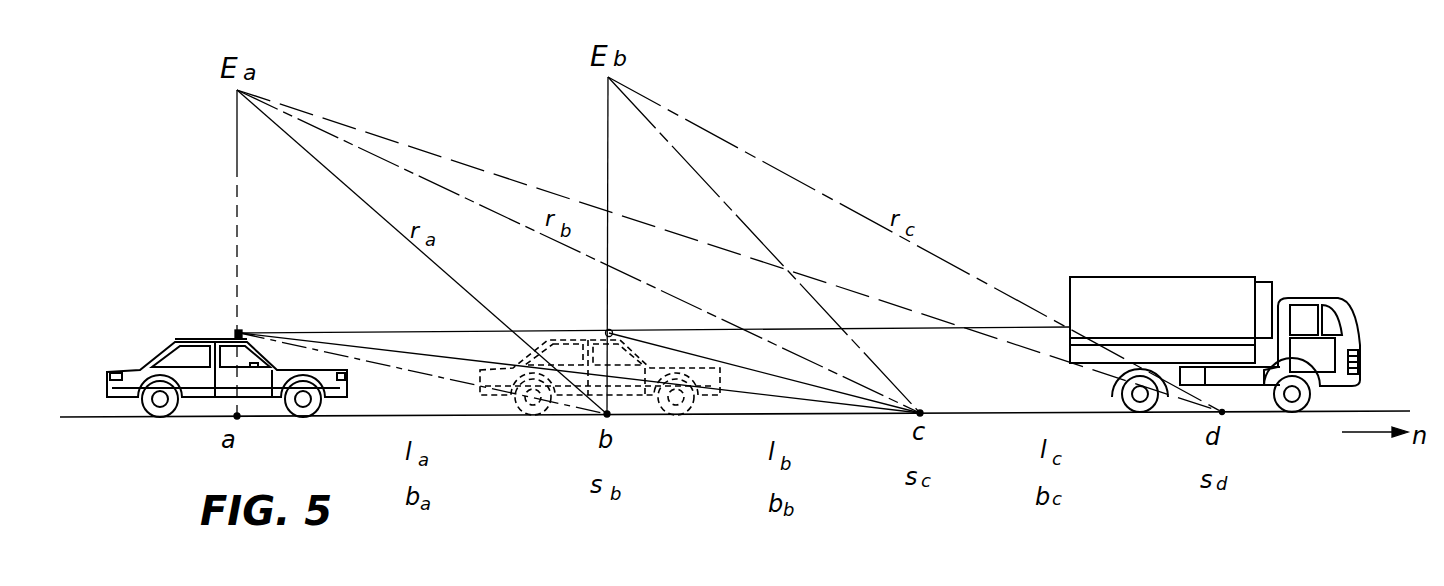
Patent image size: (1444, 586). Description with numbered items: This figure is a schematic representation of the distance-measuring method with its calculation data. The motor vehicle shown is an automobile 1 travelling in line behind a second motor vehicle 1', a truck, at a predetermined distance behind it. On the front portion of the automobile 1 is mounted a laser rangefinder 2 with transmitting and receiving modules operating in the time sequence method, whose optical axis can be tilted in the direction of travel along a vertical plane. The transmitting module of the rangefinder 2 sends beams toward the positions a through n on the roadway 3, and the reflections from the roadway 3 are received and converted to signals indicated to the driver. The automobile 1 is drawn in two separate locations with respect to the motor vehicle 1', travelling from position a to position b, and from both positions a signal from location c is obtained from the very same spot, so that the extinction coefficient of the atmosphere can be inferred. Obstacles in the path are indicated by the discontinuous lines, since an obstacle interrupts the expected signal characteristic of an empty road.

The automobile 1 is at (227, 348).
The sensor / measuring device 2 is at (243, 330).
The second motor vehicle 1' is at (1215, 315).
The roadway 3 is at (1411, 411).